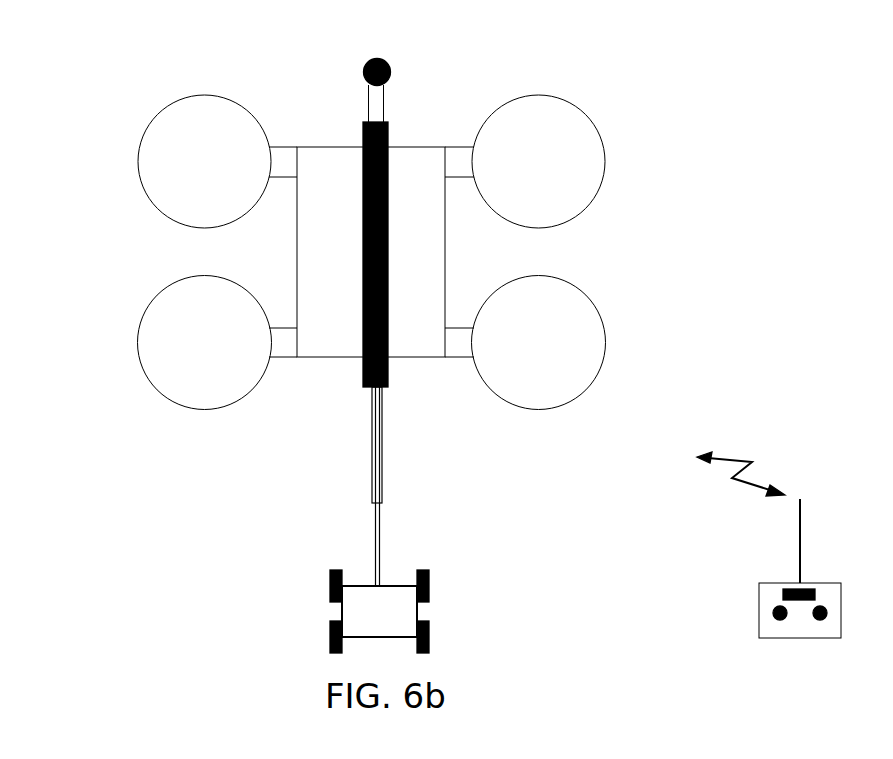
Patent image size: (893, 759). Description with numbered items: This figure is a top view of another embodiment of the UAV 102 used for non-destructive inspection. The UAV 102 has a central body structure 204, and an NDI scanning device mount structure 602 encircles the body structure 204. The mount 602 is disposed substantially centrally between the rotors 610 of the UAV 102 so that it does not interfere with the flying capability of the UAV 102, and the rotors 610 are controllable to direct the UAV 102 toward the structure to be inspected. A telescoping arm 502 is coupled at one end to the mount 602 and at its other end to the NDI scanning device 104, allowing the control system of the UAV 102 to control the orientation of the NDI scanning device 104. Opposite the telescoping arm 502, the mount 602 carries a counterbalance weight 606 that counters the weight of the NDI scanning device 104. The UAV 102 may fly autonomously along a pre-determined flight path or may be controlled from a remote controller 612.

The UAV 102 is at (122, 66).
The rotors 610 is at (225, 176).
The body structure 204 is at (441, 264).
The NDI scanning device mount structure 602 is at (388, 159).
The counterbalance weight 606 is at (390, 64).
The telescoping arm 502 is at (306, 483).
The NDI scanning device 104 is at (395, 624).
The remote controller 612 is at (759, 623).